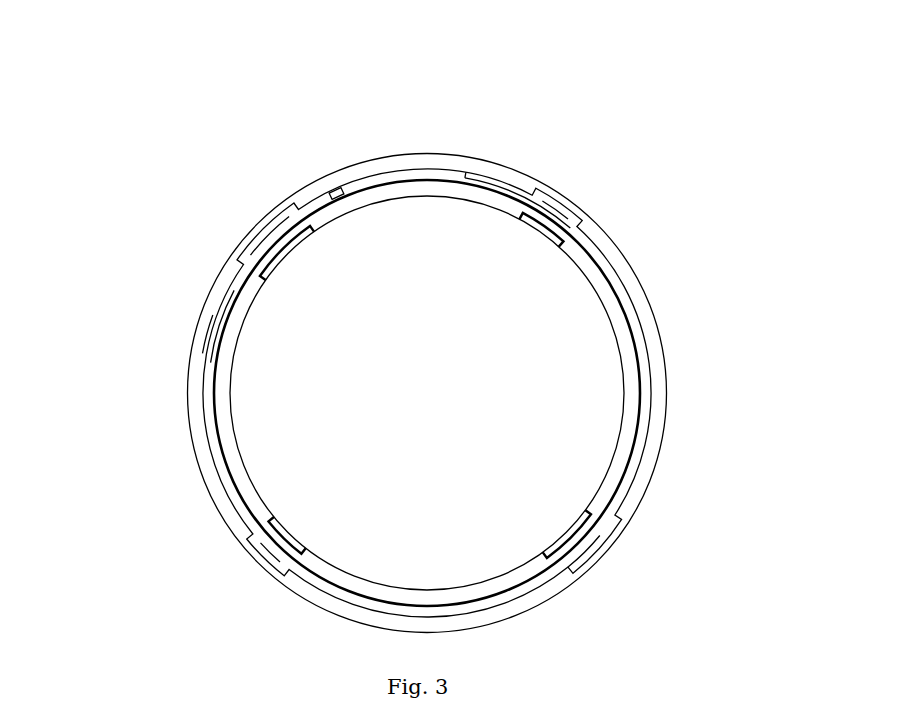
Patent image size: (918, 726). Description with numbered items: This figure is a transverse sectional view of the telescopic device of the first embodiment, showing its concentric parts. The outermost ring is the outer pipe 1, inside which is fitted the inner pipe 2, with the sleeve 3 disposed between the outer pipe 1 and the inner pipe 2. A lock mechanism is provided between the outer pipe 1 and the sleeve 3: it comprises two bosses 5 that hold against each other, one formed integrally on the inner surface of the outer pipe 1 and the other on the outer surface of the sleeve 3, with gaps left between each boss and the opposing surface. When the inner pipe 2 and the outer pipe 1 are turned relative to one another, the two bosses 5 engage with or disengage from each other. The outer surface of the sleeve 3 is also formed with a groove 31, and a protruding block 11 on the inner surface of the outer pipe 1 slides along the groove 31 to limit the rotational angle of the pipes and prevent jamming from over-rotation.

The outer pipe 1 is at (666, 292).
The protruding block 11 is at (602, 229).
The inner pipe 2 is at (430, 173).
The sleeve 3 is at (662, 445).
The groove 31 is at (530, 179).
The bosses 5 is at (189, 336).